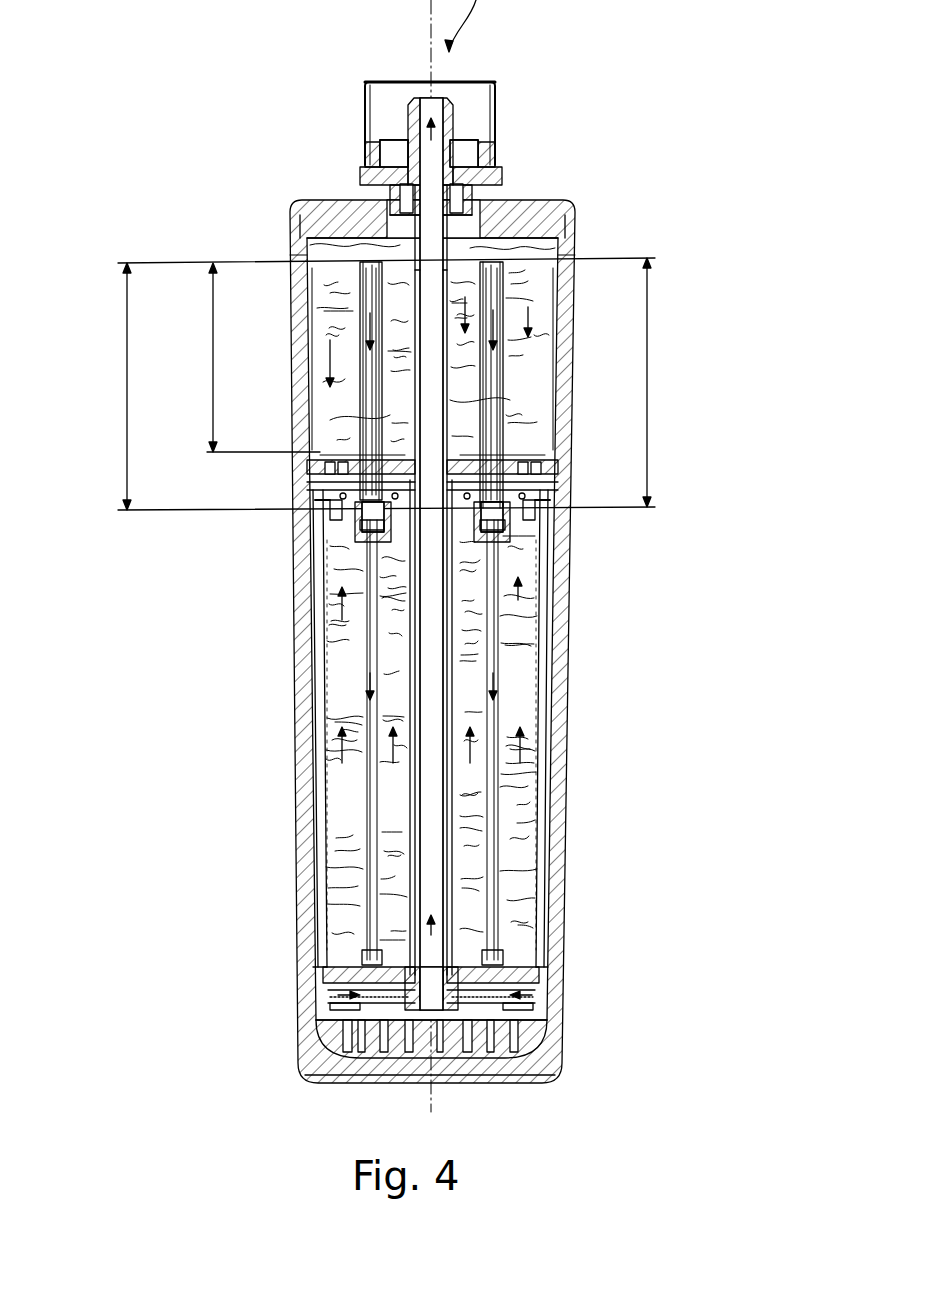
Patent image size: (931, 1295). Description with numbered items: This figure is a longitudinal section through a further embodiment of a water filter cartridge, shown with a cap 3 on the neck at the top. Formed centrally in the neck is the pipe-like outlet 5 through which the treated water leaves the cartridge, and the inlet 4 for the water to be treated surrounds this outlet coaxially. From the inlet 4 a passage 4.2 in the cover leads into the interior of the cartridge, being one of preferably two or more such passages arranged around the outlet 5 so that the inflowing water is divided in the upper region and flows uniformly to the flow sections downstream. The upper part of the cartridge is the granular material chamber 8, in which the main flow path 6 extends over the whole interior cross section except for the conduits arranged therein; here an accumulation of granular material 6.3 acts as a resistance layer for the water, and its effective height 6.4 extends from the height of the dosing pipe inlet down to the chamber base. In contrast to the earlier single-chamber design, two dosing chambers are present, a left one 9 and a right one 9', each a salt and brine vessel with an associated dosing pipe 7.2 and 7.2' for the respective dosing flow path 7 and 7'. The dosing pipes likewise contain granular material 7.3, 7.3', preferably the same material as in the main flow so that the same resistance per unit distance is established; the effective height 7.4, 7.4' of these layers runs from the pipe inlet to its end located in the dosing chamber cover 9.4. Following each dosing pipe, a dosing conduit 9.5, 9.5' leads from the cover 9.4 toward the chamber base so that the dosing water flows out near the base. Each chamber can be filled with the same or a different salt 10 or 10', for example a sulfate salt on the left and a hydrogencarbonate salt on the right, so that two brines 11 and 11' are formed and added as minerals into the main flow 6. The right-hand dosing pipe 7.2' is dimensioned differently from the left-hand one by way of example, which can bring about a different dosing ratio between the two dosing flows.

The cap 3 is at (387, 80).
The outlet 5 is at (434, 108).
The inlet 4 is at (473, 143).
The passage 4.2 is at (482, 197).
The granular material chamber 8 is at (570, 230).
The main flow path 6 is at (335, 398).
The granular material 6.3 is at (358, 292).
The effective height 6.4 is at (212, 335).
The dosing flow path 7 is at (316, 381).
The dosing flow path 7' is at (552, 385).
The dosing pipe 7.2 is at (299, 381).
The dosing pipe 7.2' is at (564, 384).
The granular material 7.3 is at (294, 381).
The granular material 7.3' is at (572, 378).
The effective height 7.4 is at (86, 386).
The effective height 7.4' is at (689, 382).
The dosing chamber 9 is at (273, 728).
The dosing chamber 9' is at (583, 728).
The dosing chamber cover 9.4 is at (345, 492).
The dosing conduit 9.5 is at (284, 745).
The dosing conduit 9.5' is at (599, 745).
The salt 10 is at (326, 920).
The salt 10' is at (548, 917).
The brine 11 is at (310, 742).
The brine 11' is at (564, 742).